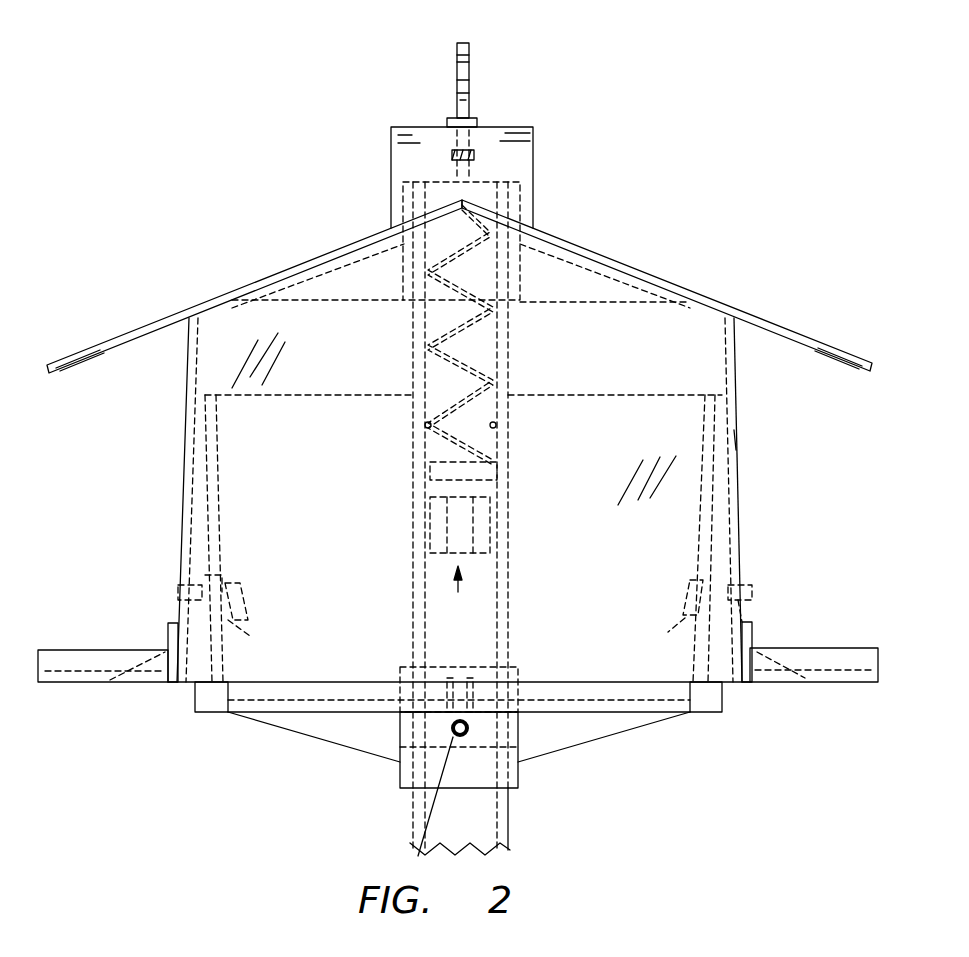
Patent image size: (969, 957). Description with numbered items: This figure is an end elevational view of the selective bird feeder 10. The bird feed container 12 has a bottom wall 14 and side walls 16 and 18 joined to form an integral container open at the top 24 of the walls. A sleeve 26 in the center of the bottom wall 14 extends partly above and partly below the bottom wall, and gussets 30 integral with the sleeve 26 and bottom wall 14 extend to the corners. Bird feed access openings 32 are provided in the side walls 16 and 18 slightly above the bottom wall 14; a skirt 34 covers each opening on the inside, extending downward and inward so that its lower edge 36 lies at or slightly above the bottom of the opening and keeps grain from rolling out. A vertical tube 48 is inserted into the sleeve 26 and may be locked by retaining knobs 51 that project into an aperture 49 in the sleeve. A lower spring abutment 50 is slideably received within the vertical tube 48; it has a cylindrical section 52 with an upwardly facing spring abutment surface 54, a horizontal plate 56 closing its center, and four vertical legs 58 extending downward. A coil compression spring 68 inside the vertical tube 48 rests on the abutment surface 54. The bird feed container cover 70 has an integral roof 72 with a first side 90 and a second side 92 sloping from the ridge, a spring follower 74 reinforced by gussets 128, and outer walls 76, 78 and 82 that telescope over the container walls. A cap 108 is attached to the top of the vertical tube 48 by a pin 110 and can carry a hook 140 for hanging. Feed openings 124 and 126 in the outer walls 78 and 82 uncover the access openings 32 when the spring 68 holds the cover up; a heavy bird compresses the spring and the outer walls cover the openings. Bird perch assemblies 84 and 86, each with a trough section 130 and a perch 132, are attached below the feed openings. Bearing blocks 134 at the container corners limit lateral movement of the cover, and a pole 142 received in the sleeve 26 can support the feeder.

The bird feeder 10 is at (301, 160).
The bird feed container 12 is at (315, 782).
The bottom wall 14 is at (459, 736).
The side wall 16 is at (175, 500).
The side wall 18 is at (745, 500).
The top of the side walls and end walls 24 is at (272, 364).
The sleeve 26 is at (435, 742).
The gussets 30 is at (459, 764).
The bird feed access openings 32 is at (453, 592).
The skirt 34 is at (464, 595).
The lower edge of skirt 36 is at (456, 622).
The vertical tube 48 is at (422, 335).
The aperture 49 is at (406, 798).
The lower spring abutment 50 is at (431, 515).
The retaining knobs 51 is at (402, 796).
The cylindrical section 52 is at (413, 525).
The spring abutment surface 54 is at (425, 471).
The horizontal plate 56 is at (388, 437).
The vertical legs 58 is at (497, 546).
The coil compression spring 68 is at (526, 428).
The bird feed container cover 70 is at (254, 286).
The roof 72 is at (667, 285).
The spring follower 74 is at (502, 239).
The outer wall 76 is at (651, 431).
The outer wall 78 is at (771, 434).
The outer wall 82 is at (133, 647).
The bird perch assembly 84 is at (814, 694).
The bird perch assembly 86 is at (103, 692).
The first side of roof 90 is at (822, 321).
The second side of roof 92 is at (149, 317).
The cap 108 is at (474, 145).
The pin 110 is at (522, 129).
The feed opening 124 is at (777, 584).
The feed opening 126 is at (153, 569).
The gussets 128 is at (461, 280).
The trough section 130 is at (797, 647).
The perch 132 is at (814, 708).
The bearing blocks 134 is at (437, 732).
The hook 140 is at (405, 95).
The pole 142 is at (503, 518).